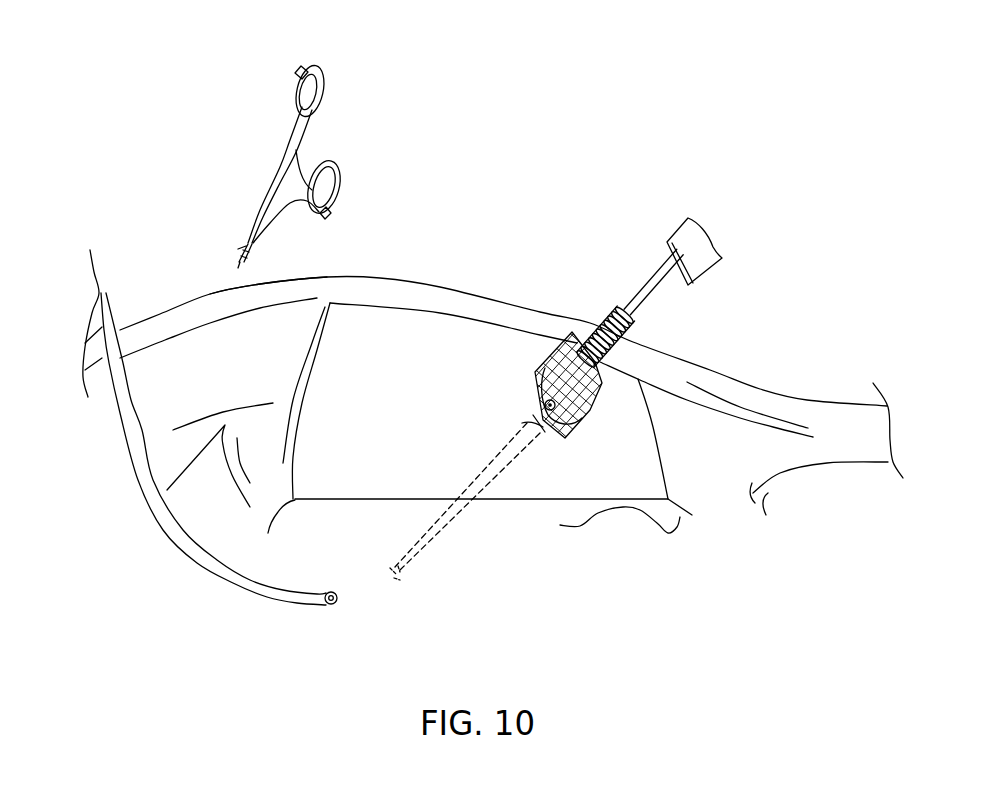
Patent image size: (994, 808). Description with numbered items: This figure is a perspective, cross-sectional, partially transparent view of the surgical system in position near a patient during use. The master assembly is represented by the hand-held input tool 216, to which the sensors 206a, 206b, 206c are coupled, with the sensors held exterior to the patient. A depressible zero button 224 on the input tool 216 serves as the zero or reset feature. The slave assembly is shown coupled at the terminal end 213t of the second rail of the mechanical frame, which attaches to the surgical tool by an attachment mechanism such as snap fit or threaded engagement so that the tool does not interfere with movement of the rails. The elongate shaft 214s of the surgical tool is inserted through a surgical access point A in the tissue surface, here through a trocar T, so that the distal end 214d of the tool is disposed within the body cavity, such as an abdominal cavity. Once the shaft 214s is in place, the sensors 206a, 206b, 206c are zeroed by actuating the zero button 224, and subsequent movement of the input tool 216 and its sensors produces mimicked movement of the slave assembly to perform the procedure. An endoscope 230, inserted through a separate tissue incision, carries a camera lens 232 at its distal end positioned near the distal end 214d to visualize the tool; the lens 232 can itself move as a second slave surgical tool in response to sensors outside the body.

The sensor 206a is at (334, 222).
The sensor 206b is at (295, 64).
The sensor 206c is at (251, 282).
The input tool 216 is at (313, 145).
The zero button 224 is at (258, 250).
The endoscope 230 is at (125, 397).
The camera lens 232 is at (345, 598).
The trocar T is at (551, 328).
The surgical access point A is at (540, 446).
The terminal end of the second rail 213t is at (678, 222).
The elongate shaft 214s is at (650, 285).
The distal end 214d is at (410, 583).